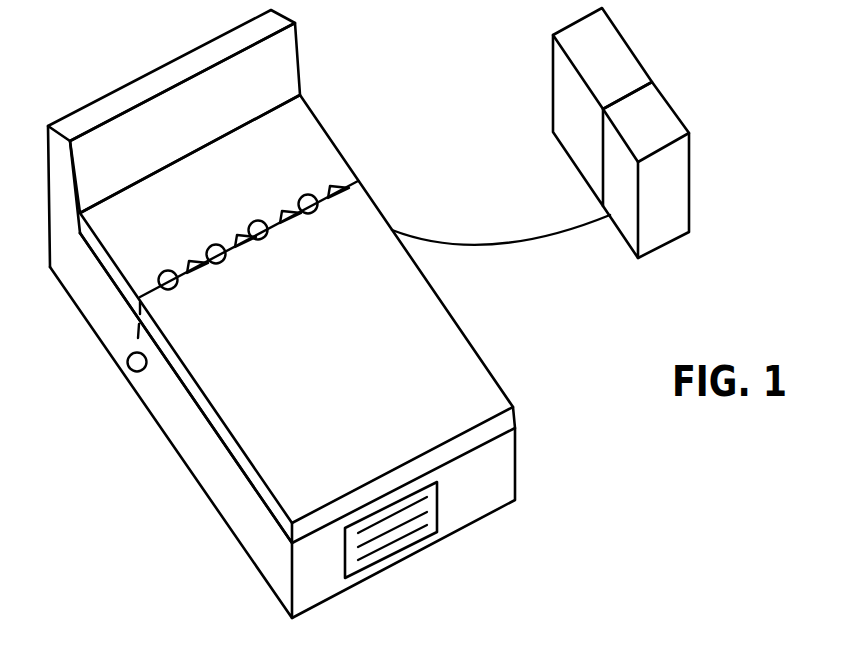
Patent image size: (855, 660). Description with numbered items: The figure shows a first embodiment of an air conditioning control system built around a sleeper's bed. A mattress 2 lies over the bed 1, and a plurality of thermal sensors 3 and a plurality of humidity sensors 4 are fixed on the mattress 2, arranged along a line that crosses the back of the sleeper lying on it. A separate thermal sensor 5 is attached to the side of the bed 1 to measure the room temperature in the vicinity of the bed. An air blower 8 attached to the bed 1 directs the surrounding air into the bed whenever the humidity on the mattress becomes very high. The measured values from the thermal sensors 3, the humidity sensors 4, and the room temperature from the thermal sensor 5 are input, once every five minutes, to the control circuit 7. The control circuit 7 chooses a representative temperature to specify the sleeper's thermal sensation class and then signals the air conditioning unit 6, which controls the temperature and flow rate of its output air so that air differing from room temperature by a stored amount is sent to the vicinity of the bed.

The bed 1 is at (492, 500).
The mattress 2 is at (503, 423).
The thermal sensors 3 is at (249, 222).
The humidity sensors 4 is at (333, 188).
The thermal sensor 5 is at (131, 377).
The air conditioning unit 6 is at (613, 48).
The control circuit 7 is at (637, 117).
The air blower 8 is at (407, 540).